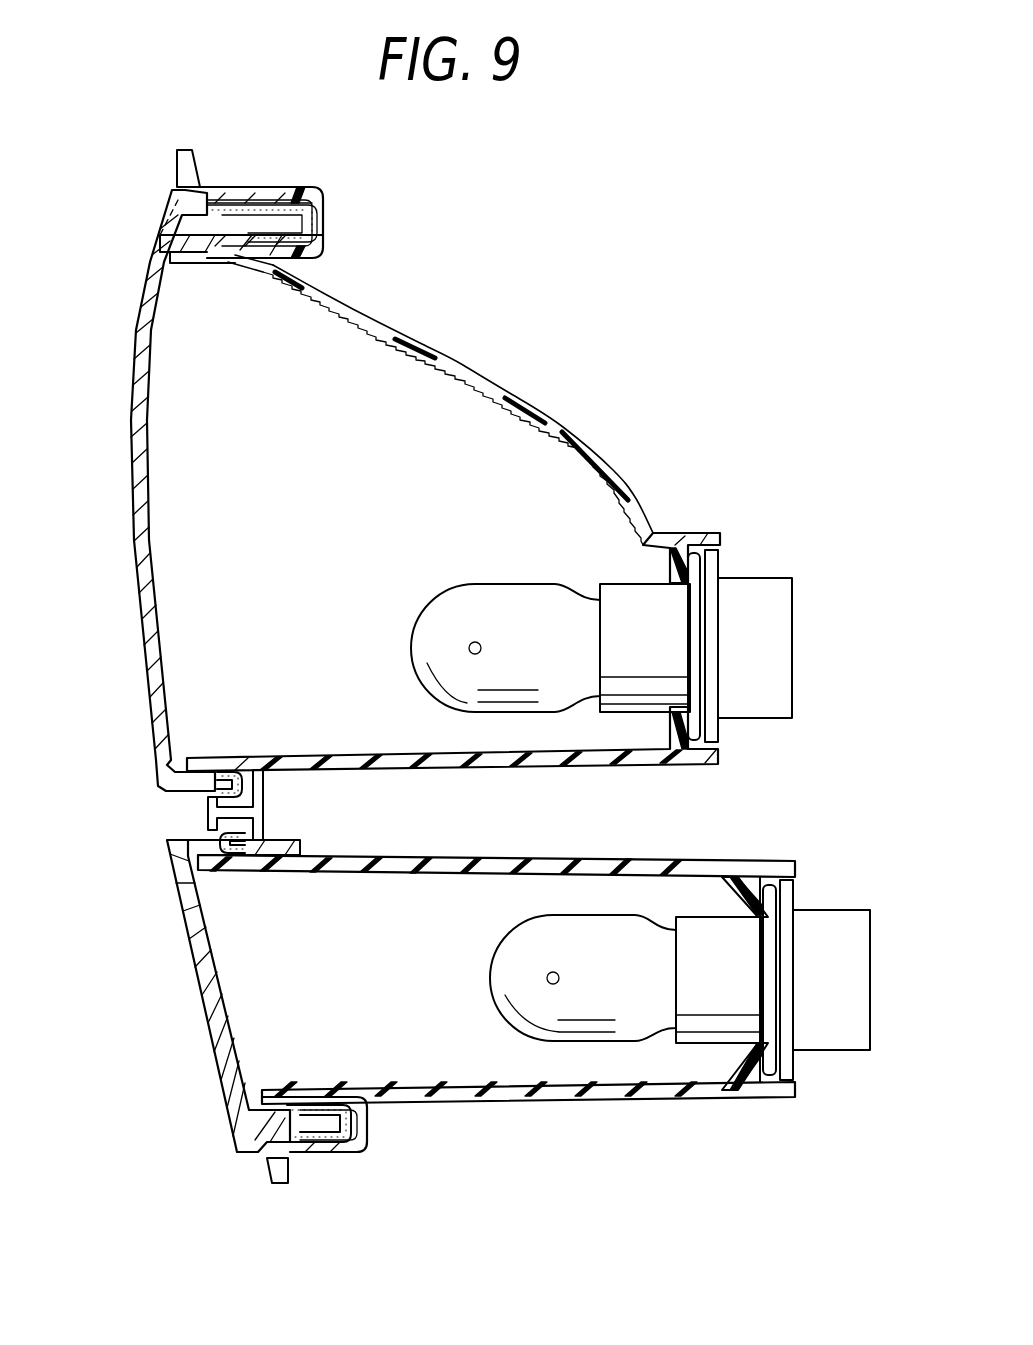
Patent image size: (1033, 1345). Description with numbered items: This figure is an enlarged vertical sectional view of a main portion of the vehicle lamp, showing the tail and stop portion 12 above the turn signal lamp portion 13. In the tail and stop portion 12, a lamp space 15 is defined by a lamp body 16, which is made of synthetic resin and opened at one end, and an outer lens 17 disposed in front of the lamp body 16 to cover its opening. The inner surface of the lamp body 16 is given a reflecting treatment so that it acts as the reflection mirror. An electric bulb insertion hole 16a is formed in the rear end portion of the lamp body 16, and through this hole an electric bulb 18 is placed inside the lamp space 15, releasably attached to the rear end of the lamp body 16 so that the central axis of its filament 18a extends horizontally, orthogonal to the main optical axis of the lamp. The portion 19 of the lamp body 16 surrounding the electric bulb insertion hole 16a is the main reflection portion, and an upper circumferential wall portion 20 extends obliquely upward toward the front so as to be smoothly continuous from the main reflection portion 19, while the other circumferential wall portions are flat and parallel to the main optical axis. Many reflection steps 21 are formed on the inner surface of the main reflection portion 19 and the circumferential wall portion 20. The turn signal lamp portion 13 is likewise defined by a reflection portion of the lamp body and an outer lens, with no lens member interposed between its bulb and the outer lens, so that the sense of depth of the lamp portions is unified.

The tail and stop portion 12 is at (426, 502).
The turn signal lamp portion 13 is at (803, 868).
The lamp space 15 is at (308, 481).
The lamp body 16 is at (566, 765).
The electric bulb insertion hole 16a is at (668, 592).
The outer lens 17 is at (135, 372).
The electric bulb 18 is at (550, 615).
The filament 18a is at (476, 640).
The main reflection portion 19 is at (612, 462).
The upper circumferential wall portion 20 is at (373, 318).
The reflection steps 21 is at (477, 400).